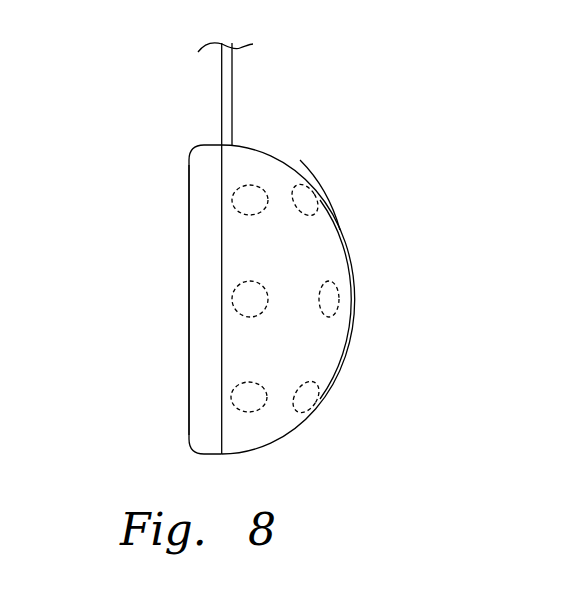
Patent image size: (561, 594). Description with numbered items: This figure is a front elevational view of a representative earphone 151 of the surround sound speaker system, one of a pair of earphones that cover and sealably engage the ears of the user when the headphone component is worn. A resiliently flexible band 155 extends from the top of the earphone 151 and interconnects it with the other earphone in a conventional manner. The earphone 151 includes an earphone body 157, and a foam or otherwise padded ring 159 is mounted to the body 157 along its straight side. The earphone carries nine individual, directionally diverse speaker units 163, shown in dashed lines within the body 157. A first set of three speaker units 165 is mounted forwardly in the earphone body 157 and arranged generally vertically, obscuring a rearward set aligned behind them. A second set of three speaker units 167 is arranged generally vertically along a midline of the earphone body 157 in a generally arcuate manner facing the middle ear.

The earphone 151 is at (345, 360).
The resiliently flexible band 155 is at (232, 92).
The earphone body 157 is at (352, 266).
The padded ring 159 is at (188, 349).
The speaker units 163 is at (323, 195).
The first set of speaker units 165 is at (232, 196).
The second set of speaker units 167 is at (297, 172).